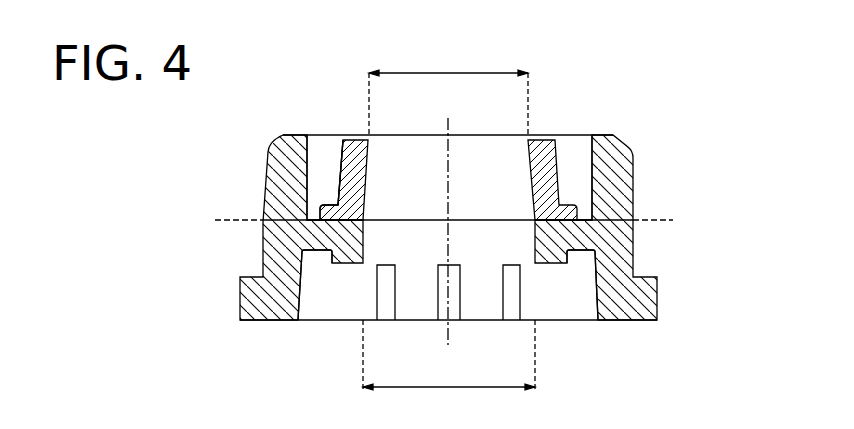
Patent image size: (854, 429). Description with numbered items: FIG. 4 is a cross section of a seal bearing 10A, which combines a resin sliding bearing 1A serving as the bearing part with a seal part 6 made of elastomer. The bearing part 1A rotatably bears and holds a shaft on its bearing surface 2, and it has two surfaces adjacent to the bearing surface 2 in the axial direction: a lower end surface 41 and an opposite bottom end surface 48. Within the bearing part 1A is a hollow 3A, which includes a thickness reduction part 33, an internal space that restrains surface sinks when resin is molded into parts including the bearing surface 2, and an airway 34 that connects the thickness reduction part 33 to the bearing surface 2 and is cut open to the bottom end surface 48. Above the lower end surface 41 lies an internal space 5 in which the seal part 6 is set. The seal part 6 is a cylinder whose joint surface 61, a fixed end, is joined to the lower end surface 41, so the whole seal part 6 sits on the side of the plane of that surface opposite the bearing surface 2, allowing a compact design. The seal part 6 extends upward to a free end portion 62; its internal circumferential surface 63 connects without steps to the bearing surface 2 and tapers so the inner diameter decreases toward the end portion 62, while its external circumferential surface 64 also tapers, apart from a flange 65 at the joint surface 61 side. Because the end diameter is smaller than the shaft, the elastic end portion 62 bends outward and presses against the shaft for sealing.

The seal bearing 10A is at (684, 104).
The sliding bearing 1A is at (633, 198).
The internal space 5 is at (324, 145).
The lower end surface 41 is at (583, 220).
The bottom end surface 48 is at (627, 310).
The seal part 6 is at (558, 145).
The end portion 62 is at (352, 145).
The internal circumferential surface 63 is at (345, 192).
The external circumferential surface 64 is at (338, 182).
The flange 65 is at (320, 210).
The joint surface 61 is at (352, 218).
The bearing surface 2 is at (483, 308).
The hollow 3A is at (456, 332).
The thickness reduction part 33 is at (583, 310).
The airway 34 is at (547, 310).